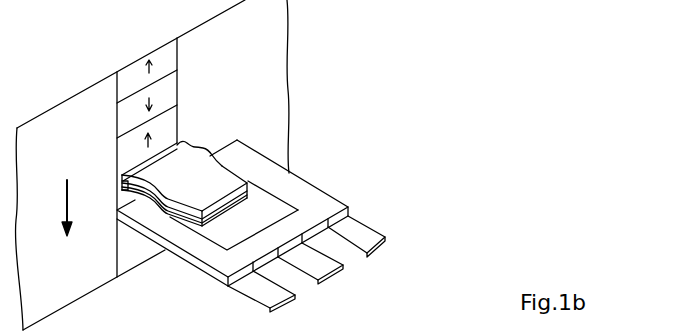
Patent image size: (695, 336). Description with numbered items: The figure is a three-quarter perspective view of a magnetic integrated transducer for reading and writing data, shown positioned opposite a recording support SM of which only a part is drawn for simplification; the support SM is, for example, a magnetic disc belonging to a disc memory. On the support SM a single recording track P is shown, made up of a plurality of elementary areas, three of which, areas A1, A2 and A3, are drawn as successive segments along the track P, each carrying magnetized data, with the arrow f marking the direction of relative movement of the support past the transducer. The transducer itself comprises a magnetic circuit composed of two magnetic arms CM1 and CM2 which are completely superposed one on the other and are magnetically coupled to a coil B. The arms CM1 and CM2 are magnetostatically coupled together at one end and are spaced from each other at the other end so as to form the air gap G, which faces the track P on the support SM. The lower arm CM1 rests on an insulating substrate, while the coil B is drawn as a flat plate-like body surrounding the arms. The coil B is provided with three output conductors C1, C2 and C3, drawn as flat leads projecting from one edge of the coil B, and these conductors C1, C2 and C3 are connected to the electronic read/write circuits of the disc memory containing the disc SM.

The recording track P is at (117, 78).
The first elementary area A1 is at (163, 57).
The second elementary area A2 is at (178, 97).
The third elementary area A3 is at (178, 134).
The recording support SM is at (245, 88).
The force direction f is at (62, 208).
The air gap G is at (122, 183).
The coil B is at (165, 232).
The first magnetic arm CM1 is at (208, 221).
The second magnetic arm CM2 is at (247, 183).
The first output conductor C1 is at (385, 239).
The second output conductor C2 is at (333, 272).
The third output conductor C3 is at (272, 304).